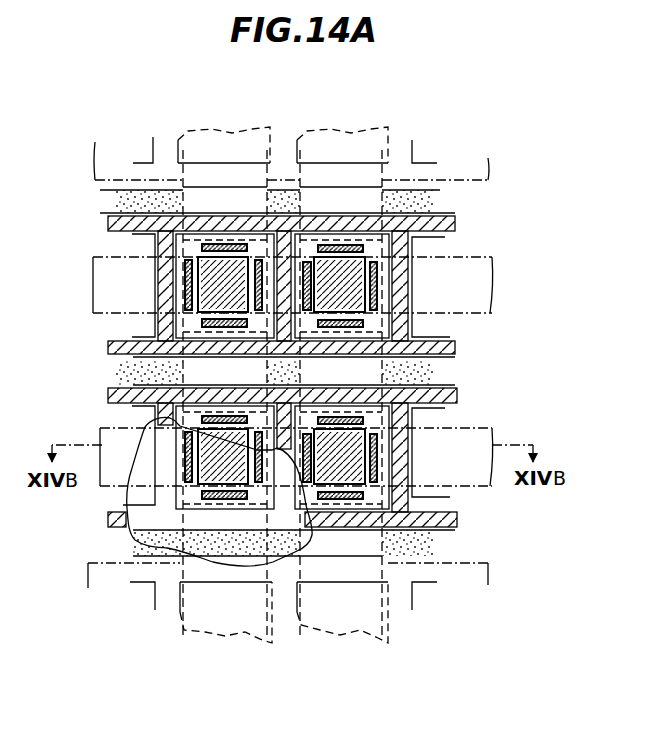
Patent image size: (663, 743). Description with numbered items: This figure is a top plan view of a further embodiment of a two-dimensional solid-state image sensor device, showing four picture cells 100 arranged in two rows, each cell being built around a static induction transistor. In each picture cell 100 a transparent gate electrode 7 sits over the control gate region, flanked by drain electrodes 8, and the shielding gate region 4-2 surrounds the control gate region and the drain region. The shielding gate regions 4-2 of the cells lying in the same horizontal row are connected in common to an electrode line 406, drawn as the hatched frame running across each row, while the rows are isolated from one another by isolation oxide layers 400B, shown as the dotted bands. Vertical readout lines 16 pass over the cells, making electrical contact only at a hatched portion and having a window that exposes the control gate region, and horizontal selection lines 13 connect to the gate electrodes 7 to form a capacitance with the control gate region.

The readout line 16 is at (229, 140).
The isolation oxide layer 400B is at (432, 202).
The electrode line 406 is at (455, 222).
The selection line 13 is at (492, 295).
The gate electrode 7 is at (358, 448).
The drain electrode 8 is at (375, 468).
The picture cell 100 is at (180, 495).
The shielding gate region 4-2 is at (160, 522).